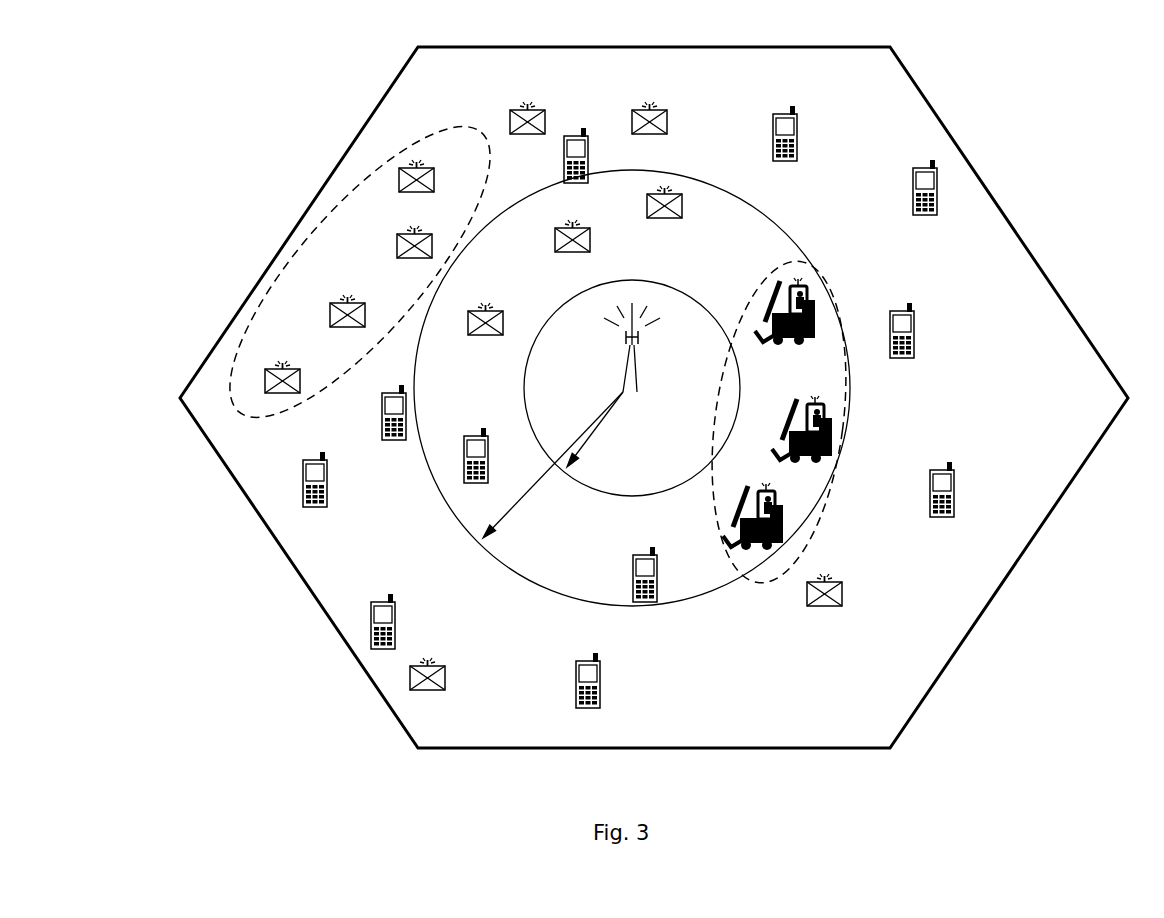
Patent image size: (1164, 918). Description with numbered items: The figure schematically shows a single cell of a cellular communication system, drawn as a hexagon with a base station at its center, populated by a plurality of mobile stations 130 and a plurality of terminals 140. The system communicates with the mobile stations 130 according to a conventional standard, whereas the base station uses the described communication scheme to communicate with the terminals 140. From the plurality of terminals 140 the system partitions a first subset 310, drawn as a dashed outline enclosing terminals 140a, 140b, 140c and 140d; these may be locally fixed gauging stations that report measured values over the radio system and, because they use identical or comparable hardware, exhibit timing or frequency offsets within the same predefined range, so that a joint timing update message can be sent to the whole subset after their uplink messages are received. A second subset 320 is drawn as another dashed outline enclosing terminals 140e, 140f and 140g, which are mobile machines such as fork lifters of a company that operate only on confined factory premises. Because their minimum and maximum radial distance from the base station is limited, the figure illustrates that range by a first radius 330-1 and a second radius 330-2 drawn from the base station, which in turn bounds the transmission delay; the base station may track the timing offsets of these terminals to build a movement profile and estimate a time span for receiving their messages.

The mobile station 130 is at (303, 495).
The terminal 140 is at (408, 672).
The terminal 140a is at (398, 167).
The terminal 140b is at (397, 238).
The terminal 140c is at (330, 305).
The terminal 140d is at (265, 372).
The terminal 140e is at (812, 313).
The terminal 140f is at (825, 433).
The terminal 140g is at (782, 523).
The first subset 310 is at (407, 140).
The second subset 320 is at (797, 262).
The first radius 330-1 is at (518, 505).
The second radius 330-2 is at (588, 440).